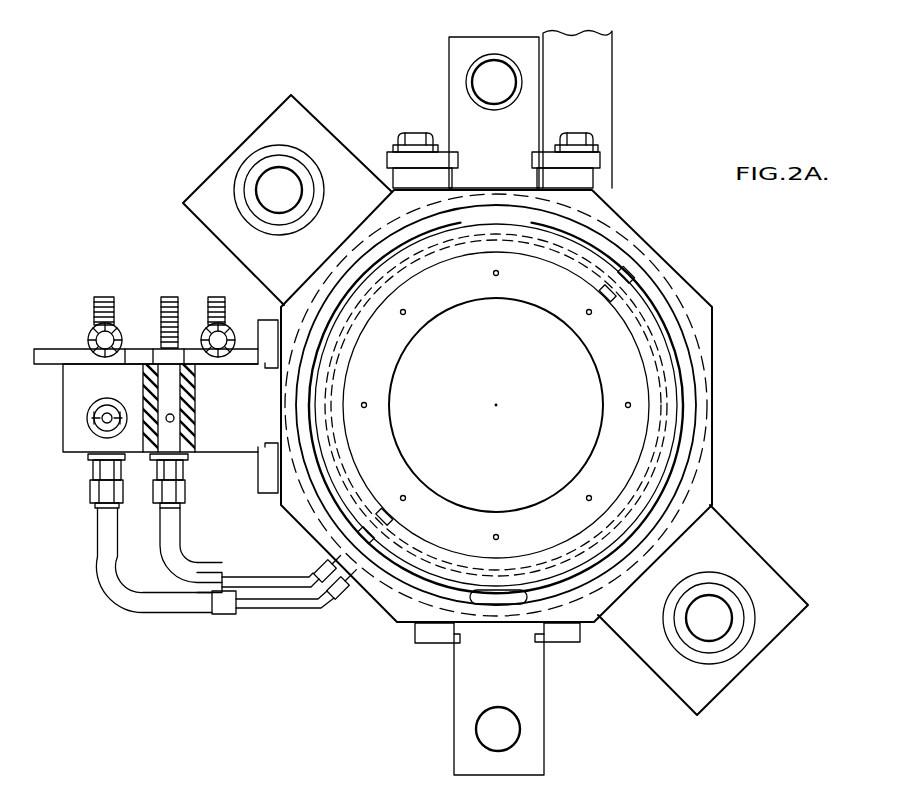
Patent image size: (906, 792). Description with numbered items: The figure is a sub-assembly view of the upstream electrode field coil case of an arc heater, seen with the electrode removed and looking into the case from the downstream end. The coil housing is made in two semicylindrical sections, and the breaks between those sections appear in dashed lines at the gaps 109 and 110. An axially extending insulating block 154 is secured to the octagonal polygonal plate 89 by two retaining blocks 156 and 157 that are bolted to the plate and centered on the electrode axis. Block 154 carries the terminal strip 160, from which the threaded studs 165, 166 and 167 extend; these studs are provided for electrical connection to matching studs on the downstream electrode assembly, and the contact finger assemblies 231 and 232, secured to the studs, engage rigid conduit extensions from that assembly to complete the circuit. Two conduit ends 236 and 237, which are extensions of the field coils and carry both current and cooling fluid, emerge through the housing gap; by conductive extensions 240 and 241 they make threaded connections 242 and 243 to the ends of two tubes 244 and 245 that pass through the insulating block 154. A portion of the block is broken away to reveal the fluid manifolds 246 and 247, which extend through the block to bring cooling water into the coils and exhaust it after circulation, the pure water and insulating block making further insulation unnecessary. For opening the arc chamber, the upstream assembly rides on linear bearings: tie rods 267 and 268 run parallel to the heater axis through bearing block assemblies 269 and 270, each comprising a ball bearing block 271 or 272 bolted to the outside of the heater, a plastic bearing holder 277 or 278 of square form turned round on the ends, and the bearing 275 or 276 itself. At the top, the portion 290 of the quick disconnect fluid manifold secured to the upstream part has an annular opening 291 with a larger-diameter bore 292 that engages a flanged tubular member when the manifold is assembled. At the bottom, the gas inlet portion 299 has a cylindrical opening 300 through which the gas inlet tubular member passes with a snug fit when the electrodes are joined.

The polygonal plate 89 is at (712, 318).
The gap between coil housing sections 109 is at (322, 526).
The gap between coil housing sections 110 is at (636, 254).
The insulating block 154 is at (68, 445).
The retaining block 156 is at (258, 336).
The retaining block 157 is at (258, 487).
The terminal strip 160 is at (66, 346).
The threaded stud 165 is at (231, 290).
The threaded stud 166 is at (160, 310).
The threaded stud 167 is at (93, 310).
The contact finger assembly 231 is at (112, 364).
The contact finger assembly 232 is at (218, 364).
The conduit extension 236 is at (318, 562).
The conduit extension 237 is at (343, 590).
The extension 240 is at (170, 558).
The extension 241 is at (193, 605).
The threaded connection 242 is at (185, 488).
The threaded connection 243 is at (92, 493).
The tube 244 is at (182, 473).
The tube 245 is at (97, 473).
The fluid manifold 246 is at (178, 418).
The fluid manifold 247 is at (97, 422).
The tie rod 267 is at (287, 182).
The tie rod 268 is at (728, 623).
The bearing block assembly 269 is at (278, 123).
The bearing block assembly 270 is at (733, 680).
The ball bearing block 271 is at (225, 235).
The ball bearing block 272 is at (685, 688).
The bearing 275 is at (308, 180).
The bearing 276 is at (730, 595).
The plastic bearing holder 277 is at (242, 174).
The plastic bearing holder 278 is at (740, 647).
The quick disconnect manifold portion 290 is at (466, 45).
The annular opening 291 is at (483, 85).
The bore 292 is at (470, 66).
The gas inlet portion 299 is at (532, 759).
The cylindrical opening 300 is at (517, 728).